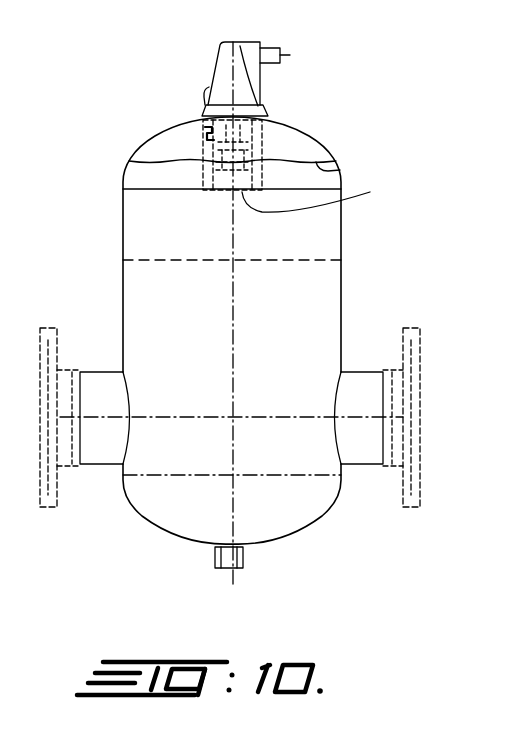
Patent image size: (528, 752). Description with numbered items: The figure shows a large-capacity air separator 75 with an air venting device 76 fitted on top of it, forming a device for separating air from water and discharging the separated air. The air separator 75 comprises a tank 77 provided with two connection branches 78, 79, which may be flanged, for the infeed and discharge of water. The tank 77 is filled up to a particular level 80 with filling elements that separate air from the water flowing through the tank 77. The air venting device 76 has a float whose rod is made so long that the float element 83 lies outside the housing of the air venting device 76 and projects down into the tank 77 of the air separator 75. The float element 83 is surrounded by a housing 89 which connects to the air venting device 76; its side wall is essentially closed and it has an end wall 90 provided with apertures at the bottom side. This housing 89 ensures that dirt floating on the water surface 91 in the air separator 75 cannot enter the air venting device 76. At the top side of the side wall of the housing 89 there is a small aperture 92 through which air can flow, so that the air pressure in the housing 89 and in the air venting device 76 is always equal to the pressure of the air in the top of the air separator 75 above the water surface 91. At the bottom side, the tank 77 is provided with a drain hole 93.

The air separator 75 is at (90, 219).
The air venting device 76 is at (225, 82).
The tank 77 is at (146, 292).
The connection branch 78 is at (97, 442).
The connection branch 79 is at (360, 447).
The level 80 is at (303, 254).
The float element 83 is at (257, 163).
The housing 89 is at (260, 140).
The end wall 90 is at (326, 193).
The water surface 91 is at (340, 165).
The small aperture 92 is at (205, 130).
The drain hole 93 is at (243, 565).